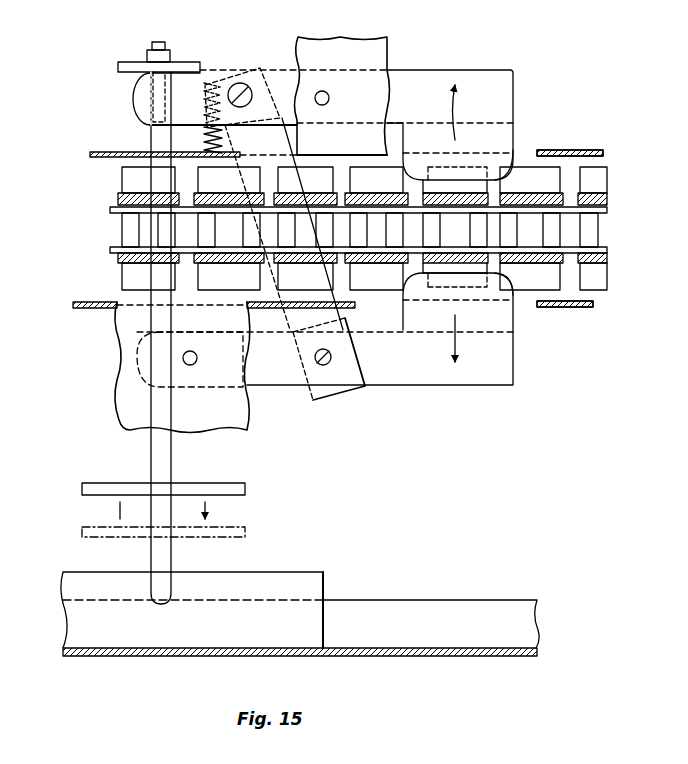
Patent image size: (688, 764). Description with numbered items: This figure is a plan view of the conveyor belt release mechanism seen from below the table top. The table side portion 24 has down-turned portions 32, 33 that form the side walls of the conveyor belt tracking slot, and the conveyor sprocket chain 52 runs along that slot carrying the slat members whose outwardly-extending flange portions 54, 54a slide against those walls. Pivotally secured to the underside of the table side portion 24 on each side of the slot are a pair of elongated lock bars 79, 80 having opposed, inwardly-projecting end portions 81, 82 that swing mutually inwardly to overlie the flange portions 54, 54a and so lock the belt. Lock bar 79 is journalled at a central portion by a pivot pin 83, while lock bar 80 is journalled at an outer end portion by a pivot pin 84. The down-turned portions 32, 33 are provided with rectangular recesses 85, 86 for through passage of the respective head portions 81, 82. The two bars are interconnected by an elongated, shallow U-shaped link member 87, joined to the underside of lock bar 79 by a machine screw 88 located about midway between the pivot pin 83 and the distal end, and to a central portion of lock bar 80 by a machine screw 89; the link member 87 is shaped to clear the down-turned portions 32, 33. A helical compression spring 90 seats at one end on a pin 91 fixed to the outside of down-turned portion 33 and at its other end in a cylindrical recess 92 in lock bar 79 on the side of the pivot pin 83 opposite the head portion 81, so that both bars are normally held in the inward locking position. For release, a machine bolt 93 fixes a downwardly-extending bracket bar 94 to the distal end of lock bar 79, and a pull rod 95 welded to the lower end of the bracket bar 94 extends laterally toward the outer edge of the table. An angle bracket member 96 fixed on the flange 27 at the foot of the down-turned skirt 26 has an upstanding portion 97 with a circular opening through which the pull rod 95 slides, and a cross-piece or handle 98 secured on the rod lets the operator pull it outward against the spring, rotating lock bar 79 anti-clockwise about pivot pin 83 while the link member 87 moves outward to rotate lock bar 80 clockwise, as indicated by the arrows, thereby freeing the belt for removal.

The table side portion 24 is at (235, 410).
The down-turned skirt 26 is at (448, 656).
The inwardly-bent flange 27 is at (405, 608).
The down-turned portion 32 is at (80, 305).
The down-turned portion 33 is at (92, 155).
The conveyor sprocket chain 52 is at (600, 228).
The outwardly-extending flange portion 54 is at (545, 191).
The outwardly-extending flange portion 54a is at (552, 285).
The lock bar 79 is at (495, 80).
The lock bar 80 is at (490, 374).
The inwardly-projecting end portion 81 is at (503, 160).
The inwardly-projecting end portion 82 is at (495, 297).
The pivot pin 83 is at (333, 94).
The pivot pin 84 is at (197, 360).
The rectangular recess 85 is at (540, 152).
The rectangular recess 86 is at (537, 308).
The link member 87 is at (268, 138).
The machine screw 88 is at (241, 82).
The machine screw 89 is at (343, 356).
The helical compression spring 90 is at (205, 115).
The pin 91 is at (204, 136).
The cylindrical recess 92 is at (205, 84).
The machine bolt 93 is at (155, 55).
The bracket bar 94 is at (118, 67).
The pull rod 95 is at (158, 463).
The angle bracket member 96 is at (318, 587).
The upstanding portion 97 is at (270, 572).
The handle 98 is at (208, 483).